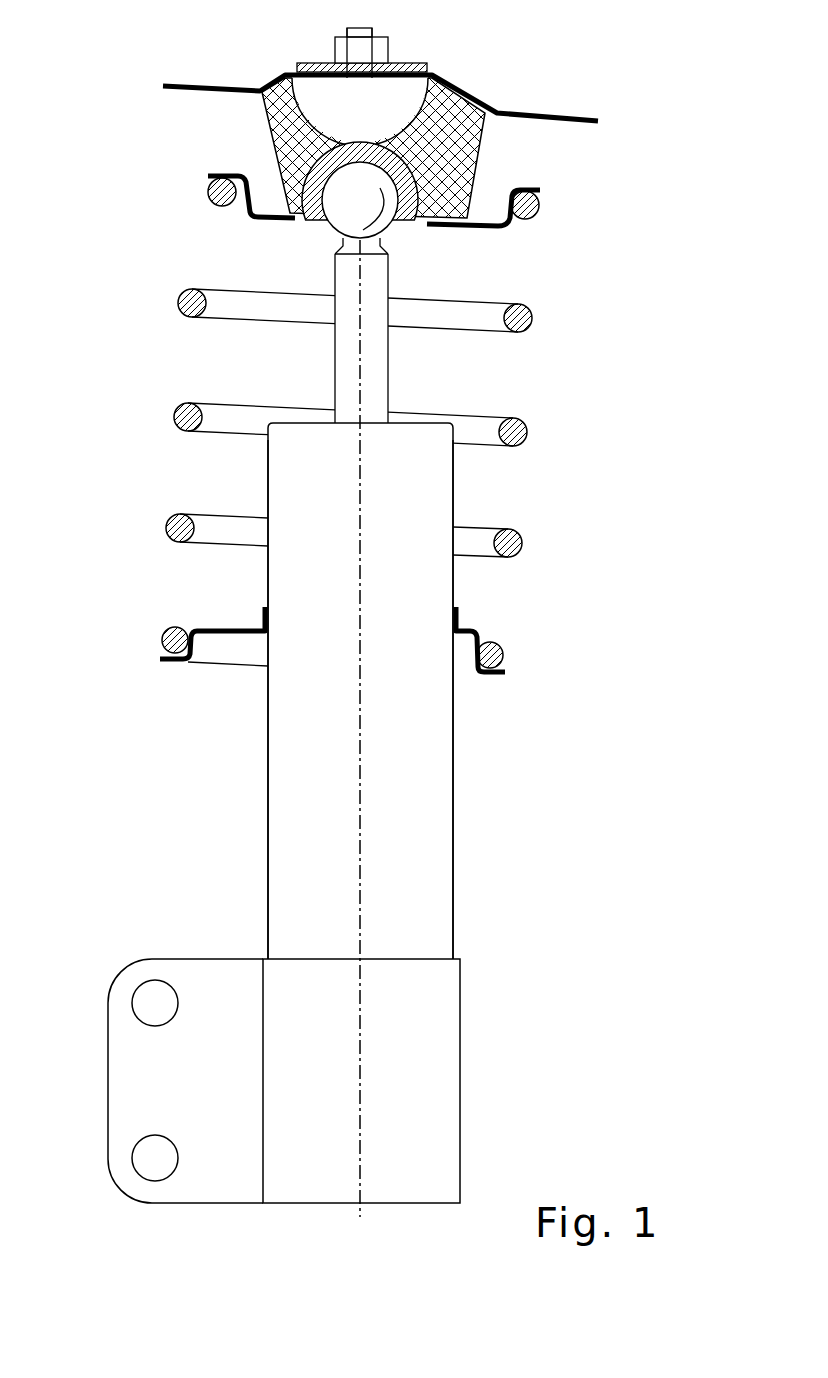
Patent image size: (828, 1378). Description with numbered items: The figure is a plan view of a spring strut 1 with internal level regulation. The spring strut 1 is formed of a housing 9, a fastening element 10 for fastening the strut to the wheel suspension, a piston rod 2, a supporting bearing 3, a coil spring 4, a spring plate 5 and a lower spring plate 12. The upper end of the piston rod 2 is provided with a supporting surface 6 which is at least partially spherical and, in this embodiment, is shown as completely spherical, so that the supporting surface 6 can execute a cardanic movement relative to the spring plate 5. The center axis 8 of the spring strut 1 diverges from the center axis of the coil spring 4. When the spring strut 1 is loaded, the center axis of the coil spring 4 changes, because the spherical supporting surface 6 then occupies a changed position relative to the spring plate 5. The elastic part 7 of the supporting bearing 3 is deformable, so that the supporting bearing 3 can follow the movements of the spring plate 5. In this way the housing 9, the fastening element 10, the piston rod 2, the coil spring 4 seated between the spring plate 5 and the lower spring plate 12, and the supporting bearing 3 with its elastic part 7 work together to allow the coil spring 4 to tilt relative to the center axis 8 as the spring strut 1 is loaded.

The spring strut 1 is at (544, 598).
The piston rod 2 is at (373, 383).
The supporting bearing 3 is at (487, 142).
The coil spring 4 is at (533, 321).
The spring plate 5 is at (540, 190).
The supporting surface 6 is at (343, 197).
The elastic part 7 is at (495, 110).
The center axis 8 is at (363, 507).
The housing 9 is at (430, 863).
The fastening element 10 is at (415, 1000).
The lower spring plate 12 is at (160, 658).